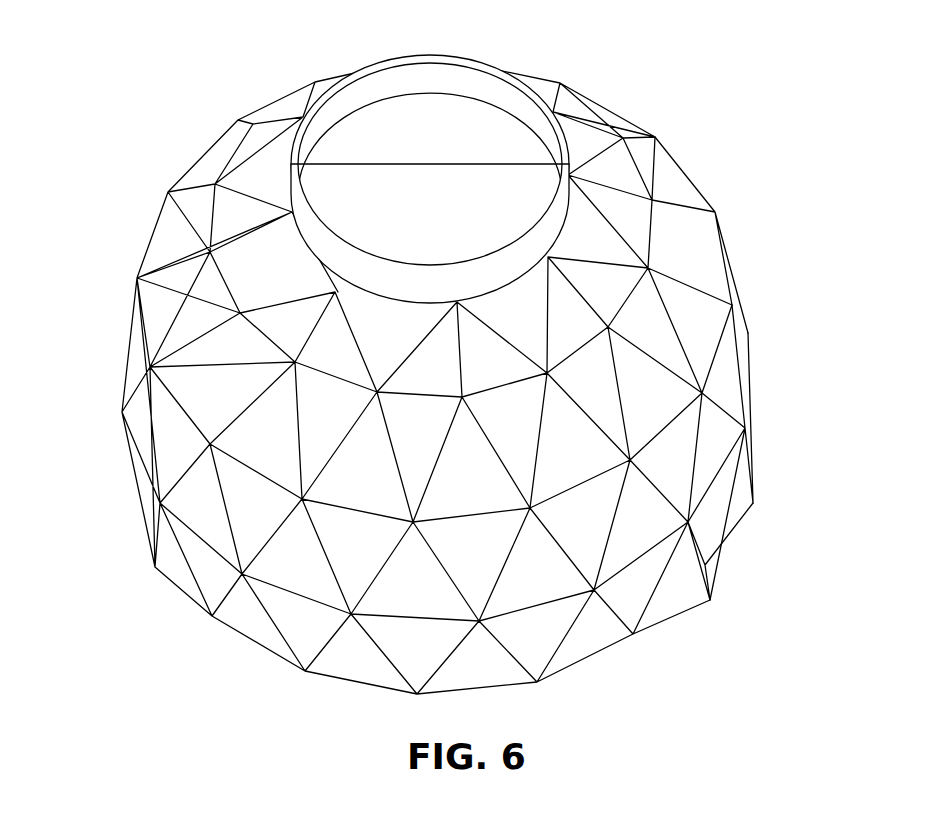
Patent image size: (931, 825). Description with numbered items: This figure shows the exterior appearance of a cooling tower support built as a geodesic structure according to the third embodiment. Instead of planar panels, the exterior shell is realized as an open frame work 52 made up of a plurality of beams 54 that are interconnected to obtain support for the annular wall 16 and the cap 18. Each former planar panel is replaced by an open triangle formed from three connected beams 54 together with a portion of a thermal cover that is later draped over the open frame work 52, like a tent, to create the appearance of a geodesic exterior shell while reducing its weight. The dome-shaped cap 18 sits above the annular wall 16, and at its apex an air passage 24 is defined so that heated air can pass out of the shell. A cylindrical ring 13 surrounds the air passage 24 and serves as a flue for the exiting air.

The open frame work 52 is at (436, 375).
The beams 54 is at (137, 390).
The cylindrical ring 13 is at (457, 87).
The air passage 24 is at (497, 138).
The cap section 18 is at (717, 208).
The annular wall 16 is at (747, 428).